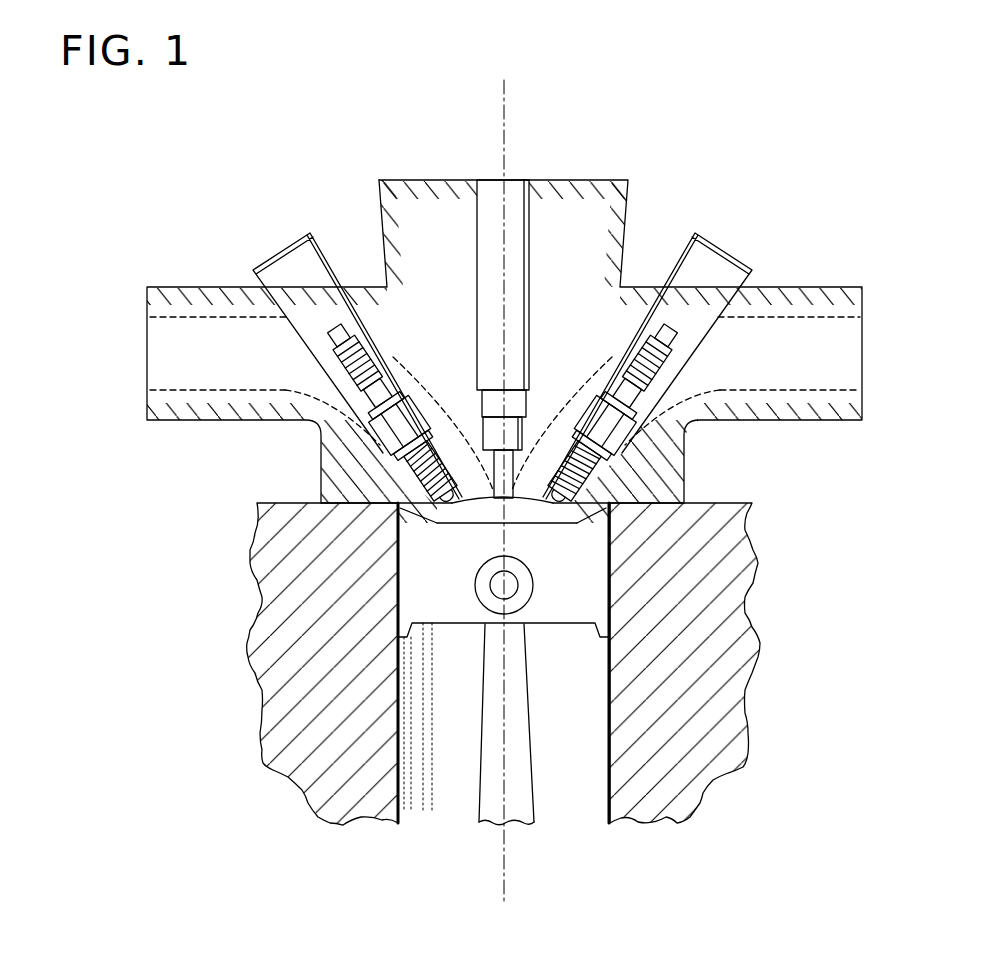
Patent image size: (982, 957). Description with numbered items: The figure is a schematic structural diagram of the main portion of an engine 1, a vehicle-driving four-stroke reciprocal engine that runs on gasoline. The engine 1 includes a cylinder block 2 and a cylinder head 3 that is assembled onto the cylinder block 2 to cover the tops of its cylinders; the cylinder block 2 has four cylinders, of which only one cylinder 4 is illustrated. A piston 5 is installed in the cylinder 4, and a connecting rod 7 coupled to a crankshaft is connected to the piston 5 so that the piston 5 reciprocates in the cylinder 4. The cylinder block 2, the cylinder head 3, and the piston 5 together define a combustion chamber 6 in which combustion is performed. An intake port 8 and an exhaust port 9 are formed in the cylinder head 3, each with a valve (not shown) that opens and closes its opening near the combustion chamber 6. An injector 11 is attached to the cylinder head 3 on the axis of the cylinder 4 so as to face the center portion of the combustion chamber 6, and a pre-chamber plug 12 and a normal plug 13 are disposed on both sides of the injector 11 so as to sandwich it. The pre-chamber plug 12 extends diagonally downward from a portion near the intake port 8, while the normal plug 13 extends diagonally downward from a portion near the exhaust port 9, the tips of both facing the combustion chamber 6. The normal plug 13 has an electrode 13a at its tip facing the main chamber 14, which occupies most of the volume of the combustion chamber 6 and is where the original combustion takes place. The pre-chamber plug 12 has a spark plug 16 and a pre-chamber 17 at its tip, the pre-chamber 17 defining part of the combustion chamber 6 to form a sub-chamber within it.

The engine 1 is at (427, 132).
The cylinder block 2 is at (275, 688).
The cylinder head 3 is at (210, 410).
The cylinder 4 is at (399, 823).
The piston 5 is at (436, 624).
The combustion chamber 6 is at (643, 566).
The connecting rod 7 is at (480, 800).
The intake port 8 is at (205, 330).
The exhaust port 9 is at (806, 330).
The injector 11 is at (524, 180).
The pre-chamber plug 12 is at (357, 365).
The normal plug 13 is at (649, 365).
The electrode 13a is at (557, 496).
The main chamber 14 is at (523, 508).
The spark plug 16 is at (400, 425).
The pre-chamber 17 is at (437, 523).